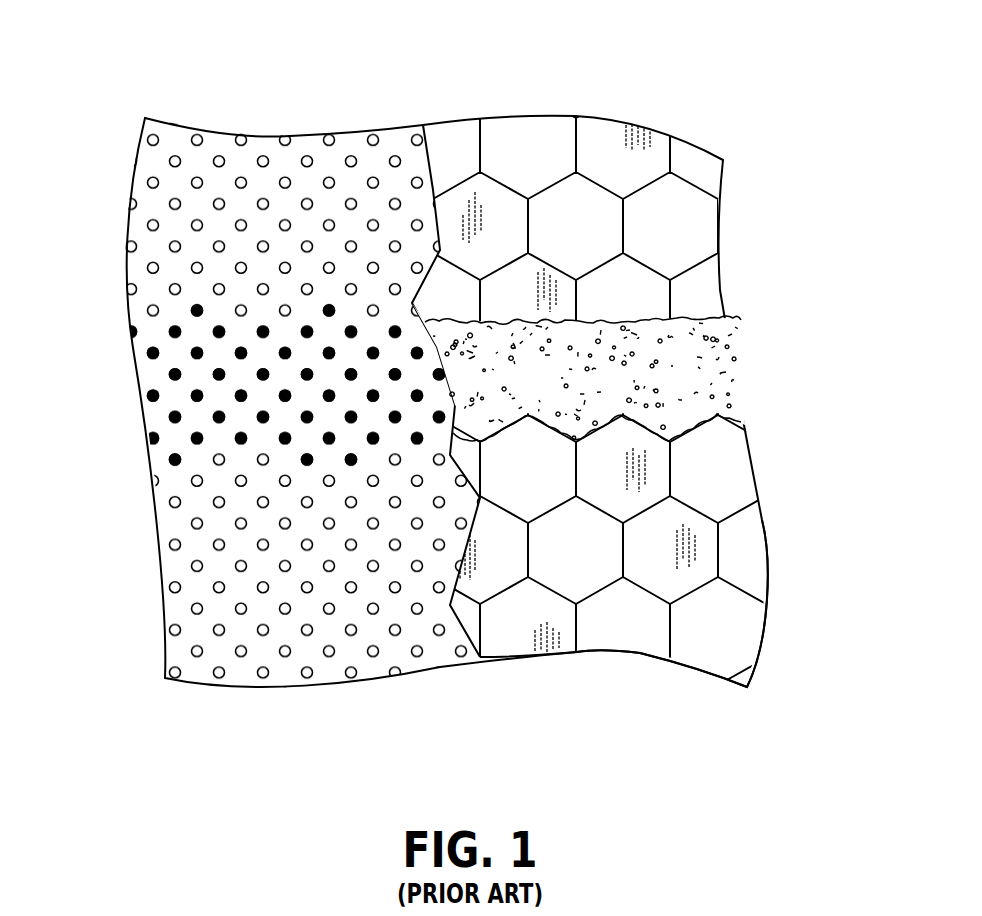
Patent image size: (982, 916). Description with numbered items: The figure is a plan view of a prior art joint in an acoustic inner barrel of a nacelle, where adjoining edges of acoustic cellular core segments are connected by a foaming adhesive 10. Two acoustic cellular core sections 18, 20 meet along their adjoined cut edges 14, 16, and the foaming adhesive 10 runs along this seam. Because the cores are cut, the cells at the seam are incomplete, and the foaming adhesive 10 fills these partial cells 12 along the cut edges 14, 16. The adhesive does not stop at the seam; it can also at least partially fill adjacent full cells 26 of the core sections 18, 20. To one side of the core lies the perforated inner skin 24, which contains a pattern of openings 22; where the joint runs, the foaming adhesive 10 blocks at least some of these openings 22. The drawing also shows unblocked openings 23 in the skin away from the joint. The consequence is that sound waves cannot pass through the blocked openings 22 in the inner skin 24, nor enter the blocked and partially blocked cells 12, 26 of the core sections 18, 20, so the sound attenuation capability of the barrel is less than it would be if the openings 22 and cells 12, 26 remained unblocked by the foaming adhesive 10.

The foaming adhesive 10 is at (733, 385).
The partial cells 12 is at (681, 413).
The cut edge 14 is at (733, 363).
The cut edge 16 is at (728, 402).
The acoustic cellular core section 18 is at (743, 585).
The acoustic cellular core section 20 is at (703, 290).
The openings 22 is at (152, 350).
The open perforations 23 is at (148, 176).
The perforated inner skin 24 is at (308, 143).
The full cells 26 is at (622, 316).